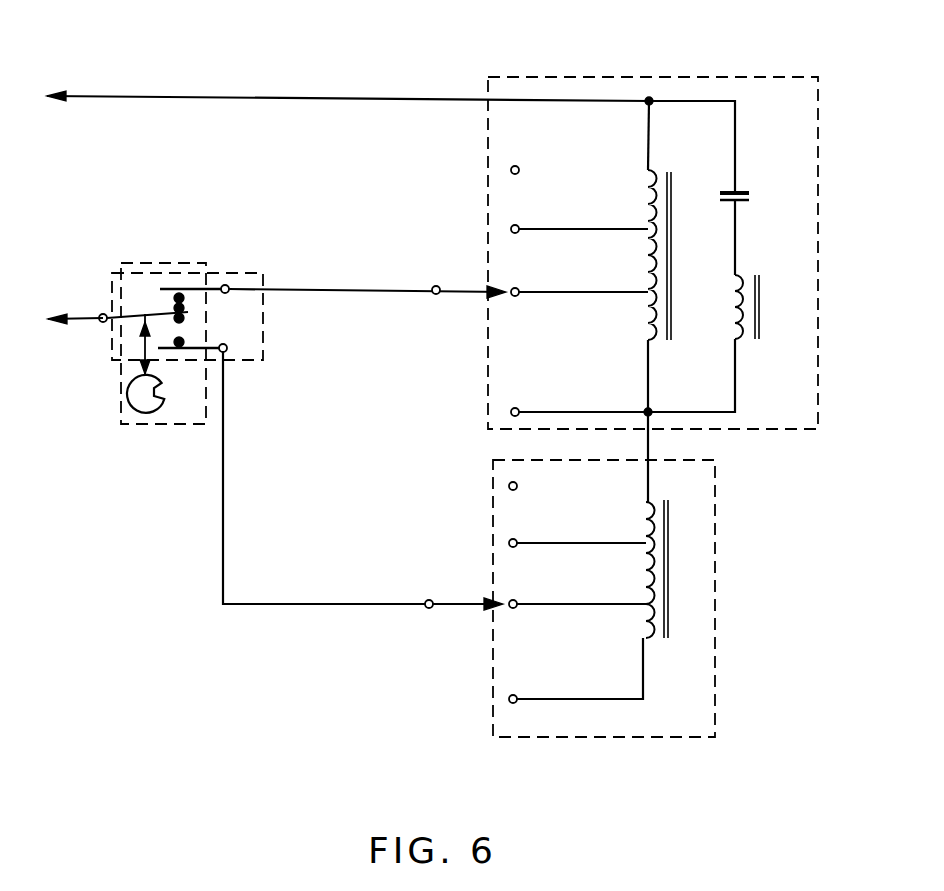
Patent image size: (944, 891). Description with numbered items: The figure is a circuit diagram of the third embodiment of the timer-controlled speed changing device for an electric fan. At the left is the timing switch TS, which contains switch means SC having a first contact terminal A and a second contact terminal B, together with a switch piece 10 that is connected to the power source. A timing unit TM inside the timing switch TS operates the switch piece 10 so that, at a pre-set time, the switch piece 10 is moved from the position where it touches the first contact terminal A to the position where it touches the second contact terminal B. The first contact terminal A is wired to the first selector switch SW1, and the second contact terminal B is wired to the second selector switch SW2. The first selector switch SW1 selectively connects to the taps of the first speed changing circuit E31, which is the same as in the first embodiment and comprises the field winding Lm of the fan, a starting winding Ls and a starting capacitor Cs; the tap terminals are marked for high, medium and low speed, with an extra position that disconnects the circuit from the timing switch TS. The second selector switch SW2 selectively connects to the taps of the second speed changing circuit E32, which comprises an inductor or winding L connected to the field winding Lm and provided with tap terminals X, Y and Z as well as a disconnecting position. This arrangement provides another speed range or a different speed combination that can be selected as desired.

The switch piece 10 is at (143, 317).
The timing switch TS is at (163, 323).
The switch means SC is at (263, 324).
The timing unit TM is at (146, 413).
The first contact terminal A is at (203, 271).
The second contact terminal B is at (201, 340).
The first selector switch SW1 is at (542, 286).
The second selector switch SW2 is at (537, 587).
The first speed changing circuit E31 is at (625, 78).
The second speed changing circuit E32 is at (577, 742).
The field winding Lm is at (681, 255).
The starting winding Ls is at (763, 307).
The starting capacitor Cs is at (752, 198).
The inductor or winding L is at (671, 569).